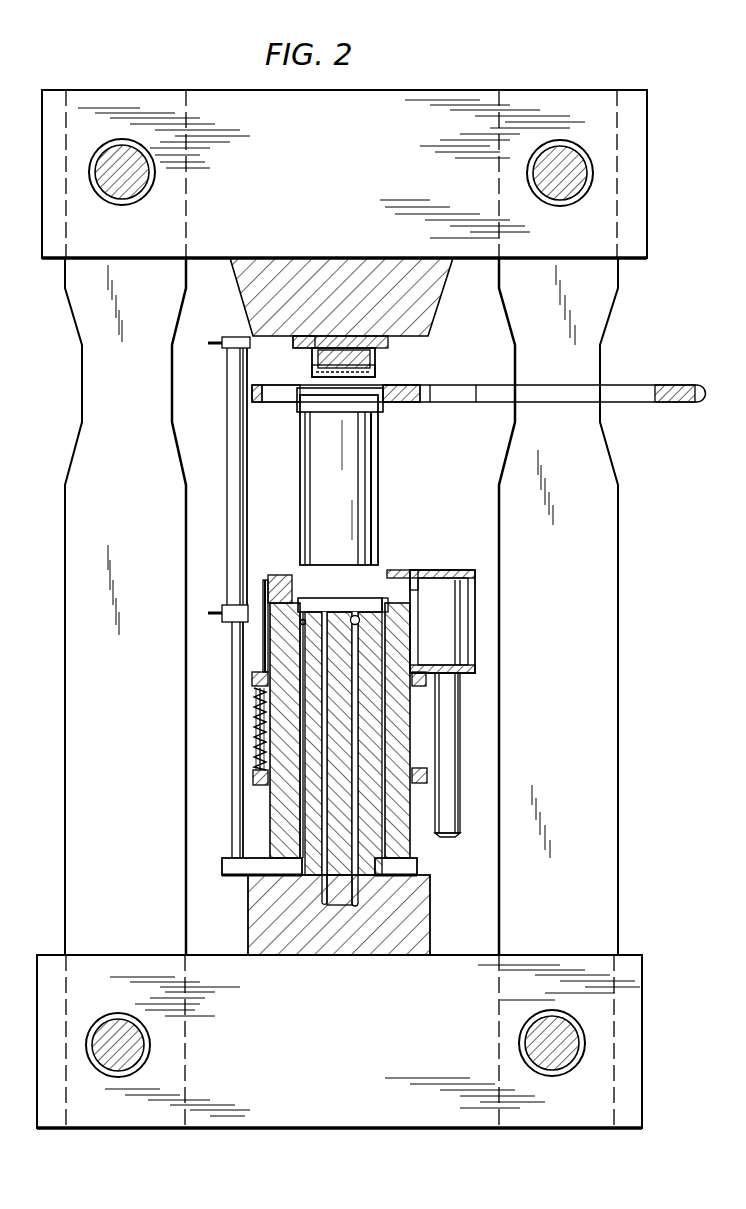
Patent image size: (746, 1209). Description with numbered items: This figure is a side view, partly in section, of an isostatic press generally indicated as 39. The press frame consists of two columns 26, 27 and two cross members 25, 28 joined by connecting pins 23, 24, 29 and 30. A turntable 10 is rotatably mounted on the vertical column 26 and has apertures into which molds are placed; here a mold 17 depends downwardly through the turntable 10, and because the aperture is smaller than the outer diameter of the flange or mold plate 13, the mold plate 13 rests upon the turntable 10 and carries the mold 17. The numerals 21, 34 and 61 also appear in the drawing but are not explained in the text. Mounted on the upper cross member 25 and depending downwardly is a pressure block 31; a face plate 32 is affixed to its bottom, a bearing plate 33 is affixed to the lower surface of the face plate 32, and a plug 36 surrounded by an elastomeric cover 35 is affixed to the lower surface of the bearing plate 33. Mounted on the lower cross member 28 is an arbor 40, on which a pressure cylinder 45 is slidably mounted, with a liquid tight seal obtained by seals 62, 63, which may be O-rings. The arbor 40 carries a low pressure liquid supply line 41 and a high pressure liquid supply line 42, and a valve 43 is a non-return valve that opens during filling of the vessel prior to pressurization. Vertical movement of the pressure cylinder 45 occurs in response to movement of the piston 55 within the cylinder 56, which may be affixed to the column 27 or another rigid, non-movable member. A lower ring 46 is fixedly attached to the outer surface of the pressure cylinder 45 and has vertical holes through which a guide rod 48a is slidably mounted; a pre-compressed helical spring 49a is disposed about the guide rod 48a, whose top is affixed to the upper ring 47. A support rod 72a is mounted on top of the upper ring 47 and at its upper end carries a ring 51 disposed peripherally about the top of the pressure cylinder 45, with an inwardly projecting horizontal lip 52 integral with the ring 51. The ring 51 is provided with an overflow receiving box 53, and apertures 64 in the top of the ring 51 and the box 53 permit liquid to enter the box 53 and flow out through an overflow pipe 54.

The turntable 10 is at (503, 403).
The mold plate 13 is at (392, 386).
The mold 17 is at (377, 493).
The plate portion 21 is at (447, 402).
The connecting pin 23 is at (552, 207).
The connecting pin 24 is at (110, 206).
The upper cross member 25 is at (337, 183).
The column 26 is at (616, 638).
The column 27 is at (65, 584).
The lower cross member 28 is at (347, 1128).
The connecting pin 29 is at (104, 1077).
The connecting pin 30 is at (552, 1078).
The pressure block 31 is at (432, 307).
The face plate 32 is at (390, 341).
The bearing plate 33 is at (378, 352).
The insert assembly 34 is at (302, 370).
The elastomeric cover 35 is at (372, 372).
The plug 36 is at (296, 343).
The isostatic press 39 is at (367, 636).
The arbor 40 is at (408, 939).
The low pressure liquid supply line 41 is at (363, 893).
The high pressure liquid supply line 42 is at (321, 904).
The valve 43 is at (356, 615).
The pressure cylinder 45 is at (410, 845).
The lower ring 46 is at (253, 778).
The upper ring 47 is at (252, 679).
The guide rod 48a is at (258, 719).
The helical spring 49a is at (258, 757).
The ring 51 is at (283, 589).
The horizontal lip 52 is at (270, 578).
The overflow receiving box 53 is at (458, 632).
The overflow pipe 54 is at (453, 744).
The piston 55 is at (233, 822).
The cylinder 56 is at (243, 503).
The left foot 61 is at (240, 876).
The seal 62 is at (400, 861).
The seal 63 is at (382, 606).
The apertures 64 is at (420, 596).
The support rod 72a is at (265, 651).